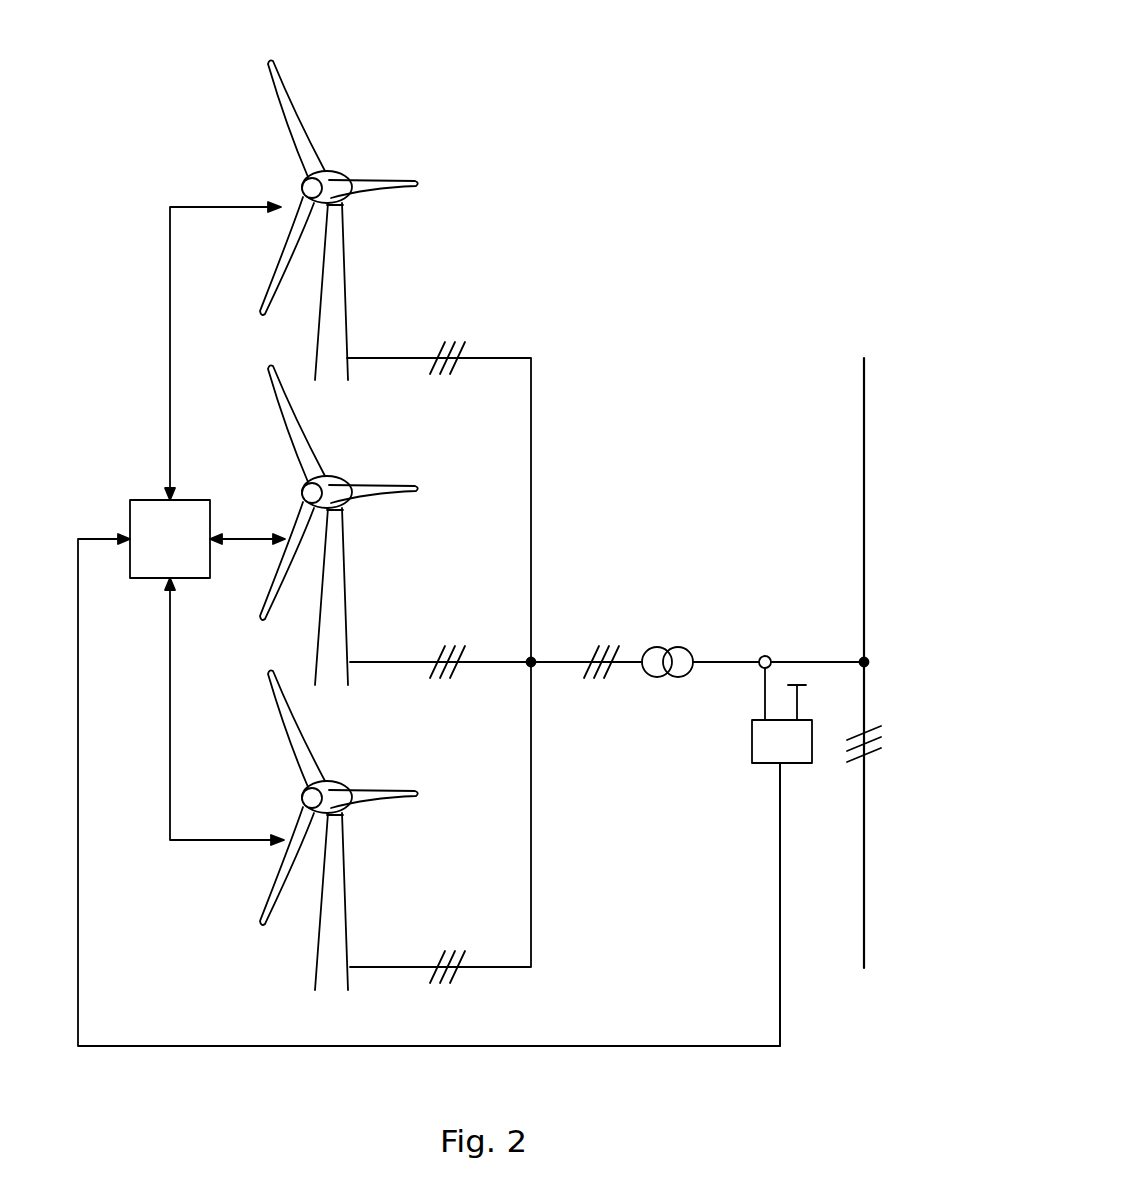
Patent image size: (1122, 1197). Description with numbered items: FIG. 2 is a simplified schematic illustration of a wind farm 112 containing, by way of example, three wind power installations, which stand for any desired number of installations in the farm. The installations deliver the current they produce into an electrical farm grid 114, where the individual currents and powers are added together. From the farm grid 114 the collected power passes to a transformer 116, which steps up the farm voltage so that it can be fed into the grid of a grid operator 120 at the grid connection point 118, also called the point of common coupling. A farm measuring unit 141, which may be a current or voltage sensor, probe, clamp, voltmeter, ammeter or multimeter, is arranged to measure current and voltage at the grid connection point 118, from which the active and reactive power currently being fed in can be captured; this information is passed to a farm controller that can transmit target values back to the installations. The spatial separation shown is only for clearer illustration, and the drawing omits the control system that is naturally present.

The wind farm 112 is at (643, 186).
The electrical farm grid 114 is at (547, 661).
The transformer 116 is at (671, 634).
The grid connection point 118 is at (876, 647).
The grid operator 120 is at (865, 392).
The farm measuring unit 141 is at (752, 742).